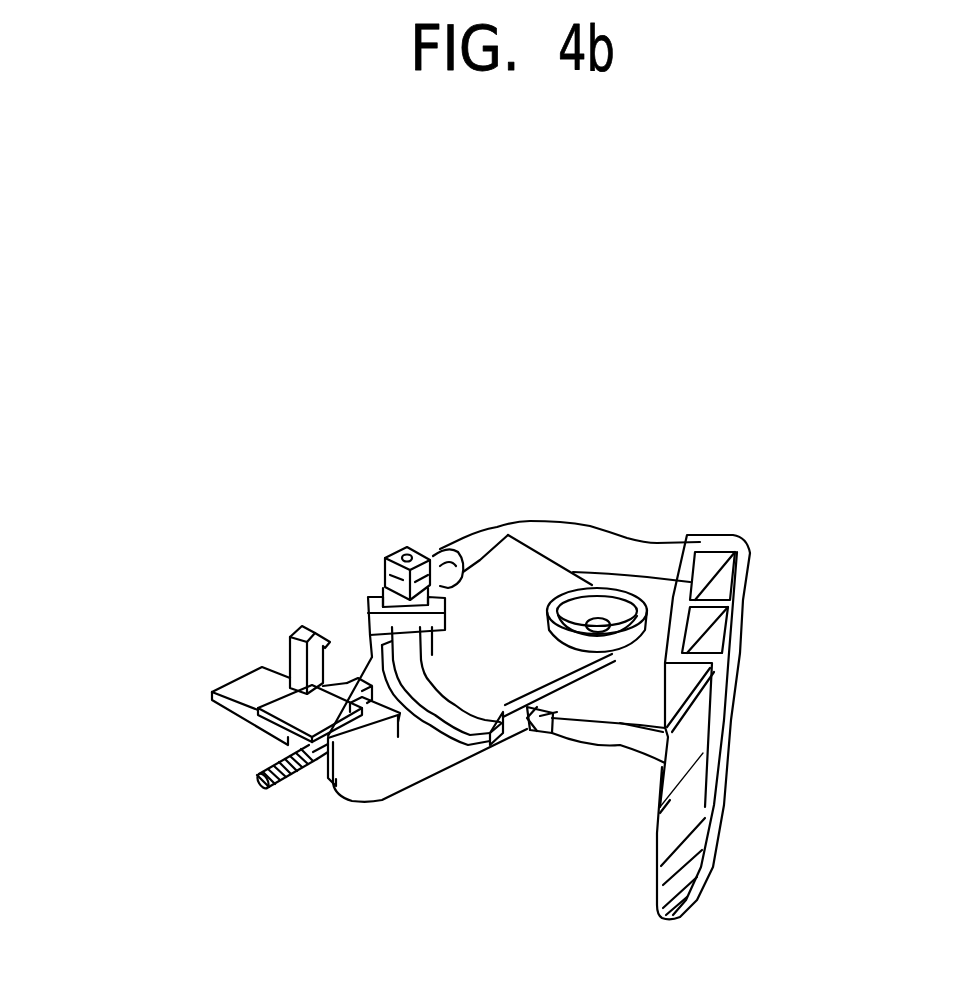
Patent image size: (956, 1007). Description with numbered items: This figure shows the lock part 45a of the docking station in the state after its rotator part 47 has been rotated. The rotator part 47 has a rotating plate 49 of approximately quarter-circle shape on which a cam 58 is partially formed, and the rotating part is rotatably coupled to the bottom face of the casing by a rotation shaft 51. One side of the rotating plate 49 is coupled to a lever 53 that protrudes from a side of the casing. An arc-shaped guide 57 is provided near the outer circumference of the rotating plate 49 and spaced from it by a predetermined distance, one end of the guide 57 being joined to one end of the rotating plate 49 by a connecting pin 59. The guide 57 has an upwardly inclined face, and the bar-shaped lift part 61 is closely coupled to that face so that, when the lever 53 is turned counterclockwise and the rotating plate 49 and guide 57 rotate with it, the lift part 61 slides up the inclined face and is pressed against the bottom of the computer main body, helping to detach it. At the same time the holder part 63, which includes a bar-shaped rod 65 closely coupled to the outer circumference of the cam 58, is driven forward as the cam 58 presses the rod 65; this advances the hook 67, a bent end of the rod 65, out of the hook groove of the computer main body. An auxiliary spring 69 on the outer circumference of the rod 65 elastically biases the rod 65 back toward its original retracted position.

The lock part 45a is at (278, 533).
The rotator part 47 is at (822, 503).
The rotating plate 49 is at (547, 572).
The rotation shaft 51 is at (602, 628).
The lever 53 is at (722, 832).
The guide 57 is at (665, 763).
The cam 58 is at (555, 718).
The connecting pin 59 is at (700, 540).
The lift part 61 is at (386, 556).
The holder part 63 is at (124, 650).
The rod 65 is at (265, 773).
The hook 67 is at (290, 652).
The auxiliary spring 69 is at (262, 780).